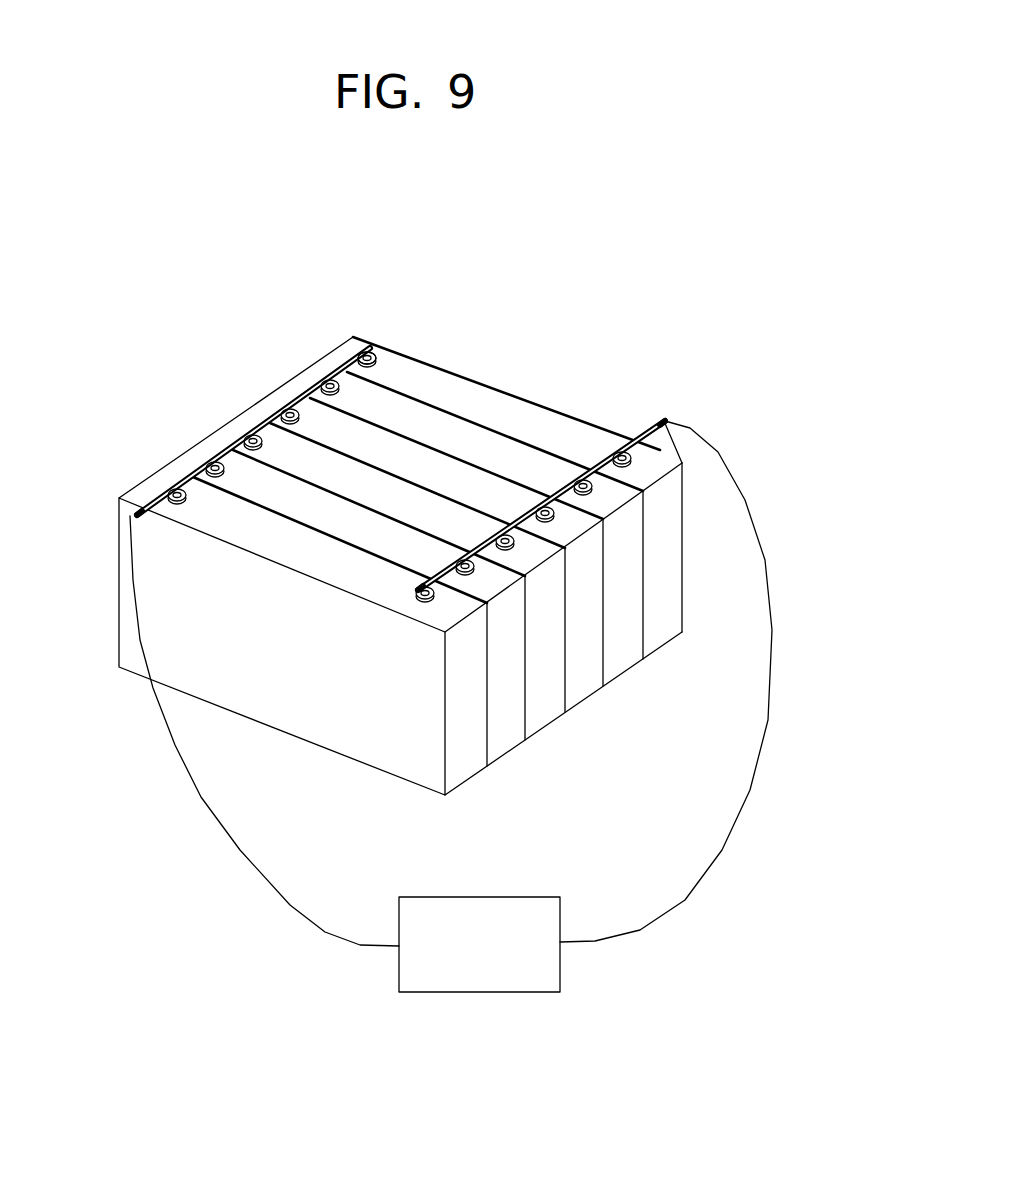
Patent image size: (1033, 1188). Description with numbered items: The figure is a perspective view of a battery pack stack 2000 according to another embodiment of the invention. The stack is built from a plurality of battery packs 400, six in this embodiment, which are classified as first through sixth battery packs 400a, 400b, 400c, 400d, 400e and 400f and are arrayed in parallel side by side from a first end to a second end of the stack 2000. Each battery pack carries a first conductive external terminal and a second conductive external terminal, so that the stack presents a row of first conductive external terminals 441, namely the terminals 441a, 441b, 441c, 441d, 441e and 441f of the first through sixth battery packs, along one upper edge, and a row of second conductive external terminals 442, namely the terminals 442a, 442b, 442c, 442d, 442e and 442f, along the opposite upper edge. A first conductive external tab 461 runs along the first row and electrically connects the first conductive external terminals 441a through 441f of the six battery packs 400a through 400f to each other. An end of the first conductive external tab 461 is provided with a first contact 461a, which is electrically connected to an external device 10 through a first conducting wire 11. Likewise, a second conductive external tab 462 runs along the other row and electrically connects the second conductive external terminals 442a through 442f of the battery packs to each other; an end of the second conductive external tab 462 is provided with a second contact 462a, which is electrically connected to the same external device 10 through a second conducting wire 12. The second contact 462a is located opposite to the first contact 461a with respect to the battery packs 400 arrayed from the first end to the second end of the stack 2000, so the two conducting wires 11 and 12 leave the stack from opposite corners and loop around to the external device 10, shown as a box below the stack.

The battery pack stack 2000 is at (587, 294).
The external device 10 is at (479, 944).
The first conducting wire 11 is at (313, 924).
The second conducting wire 12 is at (648, 917).
The battery packs 400 is at (262, 566).
The first battery pack 400a is at (340, 621).
The second battery pack 400b is at (379, 595).
The third battery pack 400c is at (417, 567).
The fourth battery pack 400d is at (456, 542).
The fifth battery pack 400e is at (495, 515).
The sixth battery pack 400f is at (517, 484).
The first conductive external terminals 441 is at (378, 357).
The first conductive external terminal of first battery pack 441a is at (167, 497).
The first conductive external terminal of second battery pack 441b is at (205, 470).
The first conductive external terminal of third battery pack 441c is at (243, 443).
The first conductive external terminal of fourth battery pack 441d is at (280, 416).
The first conductive external terminal of fifth battery pack 441e is at (320, 388).
The first conductive external terminal of sixth battery pack 441f is at (357, 360).
The second conductive external terminals 442 is at (398, 618).
The second conductive external terminal of first battery pack 442a is at (437, 600).
The second conductive external terminal of second battery pack 442b is at (477, 574).
The second conductive external terminal of third battery pack 442c is at (517, 549).
The second conductive external terminal of fourth battery pack 442d is at (556, 521).
The second conductive external terminal of fifth battery pack 442e is at (593, 491).
The second conductive external terminal of sixth battery pack 442f is at (634, 460).
The first conductive external tab 461 is at (362, 337).
The first contact 461a is at (134, 510).
The second conductive external tab 462 is at (634, 424).
The second contact 462a is at (664, 419).